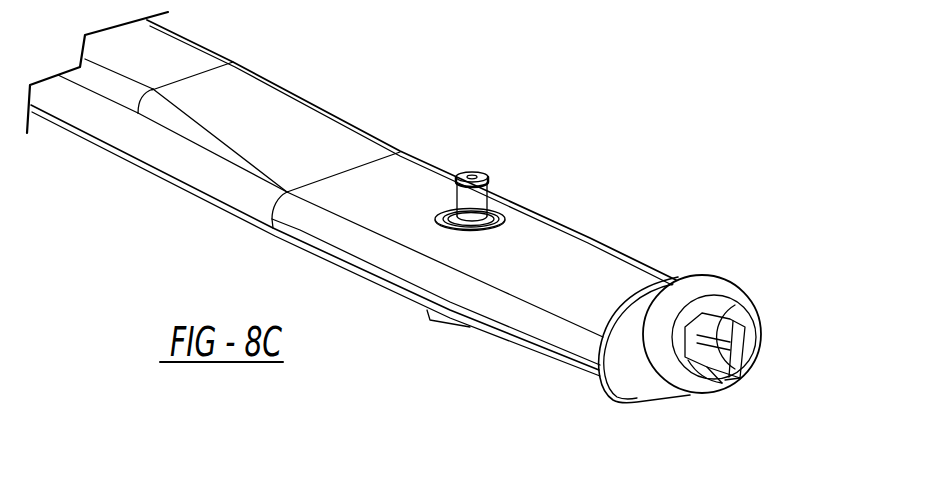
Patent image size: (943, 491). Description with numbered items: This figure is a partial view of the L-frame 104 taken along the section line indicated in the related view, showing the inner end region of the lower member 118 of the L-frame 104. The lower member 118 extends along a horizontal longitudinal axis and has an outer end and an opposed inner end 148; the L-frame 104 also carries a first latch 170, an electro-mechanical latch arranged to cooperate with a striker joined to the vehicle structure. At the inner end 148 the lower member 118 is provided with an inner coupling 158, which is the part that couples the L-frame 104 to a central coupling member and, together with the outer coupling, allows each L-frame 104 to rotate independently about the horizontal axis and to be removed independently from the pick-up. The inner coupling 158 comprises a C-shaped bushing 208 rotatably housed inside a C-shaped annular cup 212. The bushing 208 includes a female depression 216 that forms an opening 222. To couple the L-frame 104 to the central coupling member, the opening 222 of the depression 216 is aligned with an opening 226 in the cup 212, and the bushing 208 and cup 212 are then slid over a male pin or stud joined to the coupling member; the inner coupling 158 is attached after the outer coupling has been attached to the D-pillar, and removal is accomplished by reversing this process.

The L-frame 104 is at (477, 118).
The lower member 118 is at (303, 132).
The first latch 170 is at (475, 207).
The inner end 148 is at (603, 396).
The C-shaped annular cup 212 is at (655, 351).
The inner coupling 158 is at (703, 287).
The female depression 216 is at (733, 333).
The C-shaped bushing 208 is at (708, 378).
The opening 222 is at (722, 383).
The opening 226 is at (725, 380).